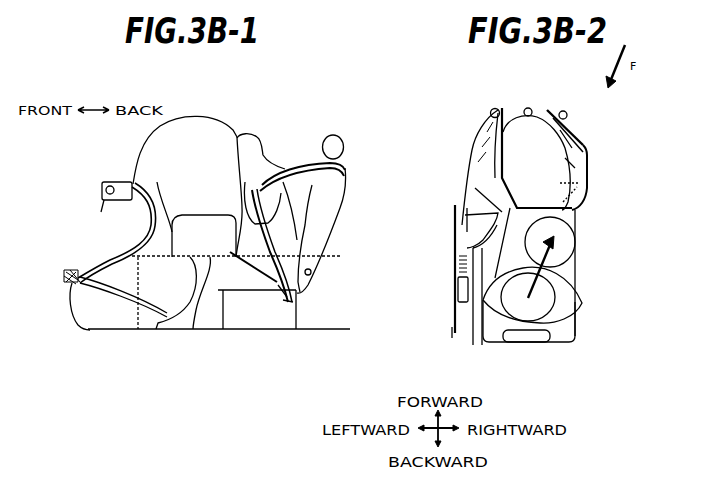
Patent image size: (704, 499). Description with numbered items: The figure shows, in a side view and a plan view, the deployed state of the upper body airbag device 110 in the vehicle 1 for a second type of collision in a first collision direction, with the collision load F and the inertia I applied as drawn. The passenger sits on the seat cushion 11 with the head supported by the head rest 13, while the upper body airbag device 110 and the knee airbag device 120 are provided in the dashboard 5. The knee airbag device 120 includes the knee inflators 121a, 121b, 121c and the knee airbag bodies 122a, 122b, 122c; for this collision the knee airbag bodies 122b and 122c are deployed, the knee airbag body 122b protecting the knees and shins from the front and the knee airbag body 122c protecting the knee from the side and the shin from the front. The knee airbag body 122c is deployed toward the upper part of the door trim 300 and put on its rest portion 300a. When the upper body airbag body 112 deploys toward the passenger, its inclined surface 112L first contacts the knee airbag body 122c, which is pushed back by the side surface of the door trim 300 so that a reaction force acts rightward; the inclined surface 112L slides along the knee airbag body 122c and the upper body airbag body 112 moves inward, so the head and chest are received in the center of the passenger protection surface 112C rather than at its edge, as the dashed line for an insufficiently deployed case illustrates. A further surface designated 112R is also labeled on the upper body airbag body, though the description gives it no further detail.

In FIG. 3B-2, the vehicle 1 is at (576, 296).
In FIG. 3B-1, the dashboard 5 is at (62, 172).
In FIG. 3B-1, the seat cushion 11 is at (247, 282).
In FIG. 3B-2, the seat cushion 11 is at (576, 312).
In FIG. 3B-1, the head rest 13 is at (333, 134).
In FIG. 3B-2, the head rest 13 is at (530, 344).
In FIG. 3B-1, the upper body airbag device 110 is at (118, 203).
In FIG. 3B-1, the upper body airbag body 112 is at (193, 118).
In FIG. 3B-2, the upper body airbag body 112 is at (590, 150).
In FIG. 3B-2, the passenger protection surface 112C is at (577, 218).
In FIG. 3B-2, the inclined surface 112L is at (483, 183).
In FIG. 3B-2, the seat back right side portion 112R is at (590, 168).
In FIG. 3B-1, the knee airbag device 120 is at (70, 268).
In FIG. 3B-2, the knee inflator 121a is at (563, 111).
In FIG. 3B-2, the knee inflator 121b is at (528, 108).
In FIG. 3B-2, the knee inflator 121c is at (495, 108).
In FIG. 3B-2, the knee airbag body 122a is at (588, 132).
In FIG. 3B-1, the knee airbag body 122b is at (157, 231).
In FIG. 3B-2, the knee airbag body 122b is at (590, 192).
In FIG. 3B-1, the knee airbag body 122c is at (208, 219).
In FIG. 3B-2, the knee airbag body 122c is at (462, 234).
In FIG. 3B-2, the door trim 300 is at (447, 342).
In FIG. 3B-1, the rest portion 300a is at (340, 256).
In FIG. 3B-2, the rest portion 300a is at (453, 332).